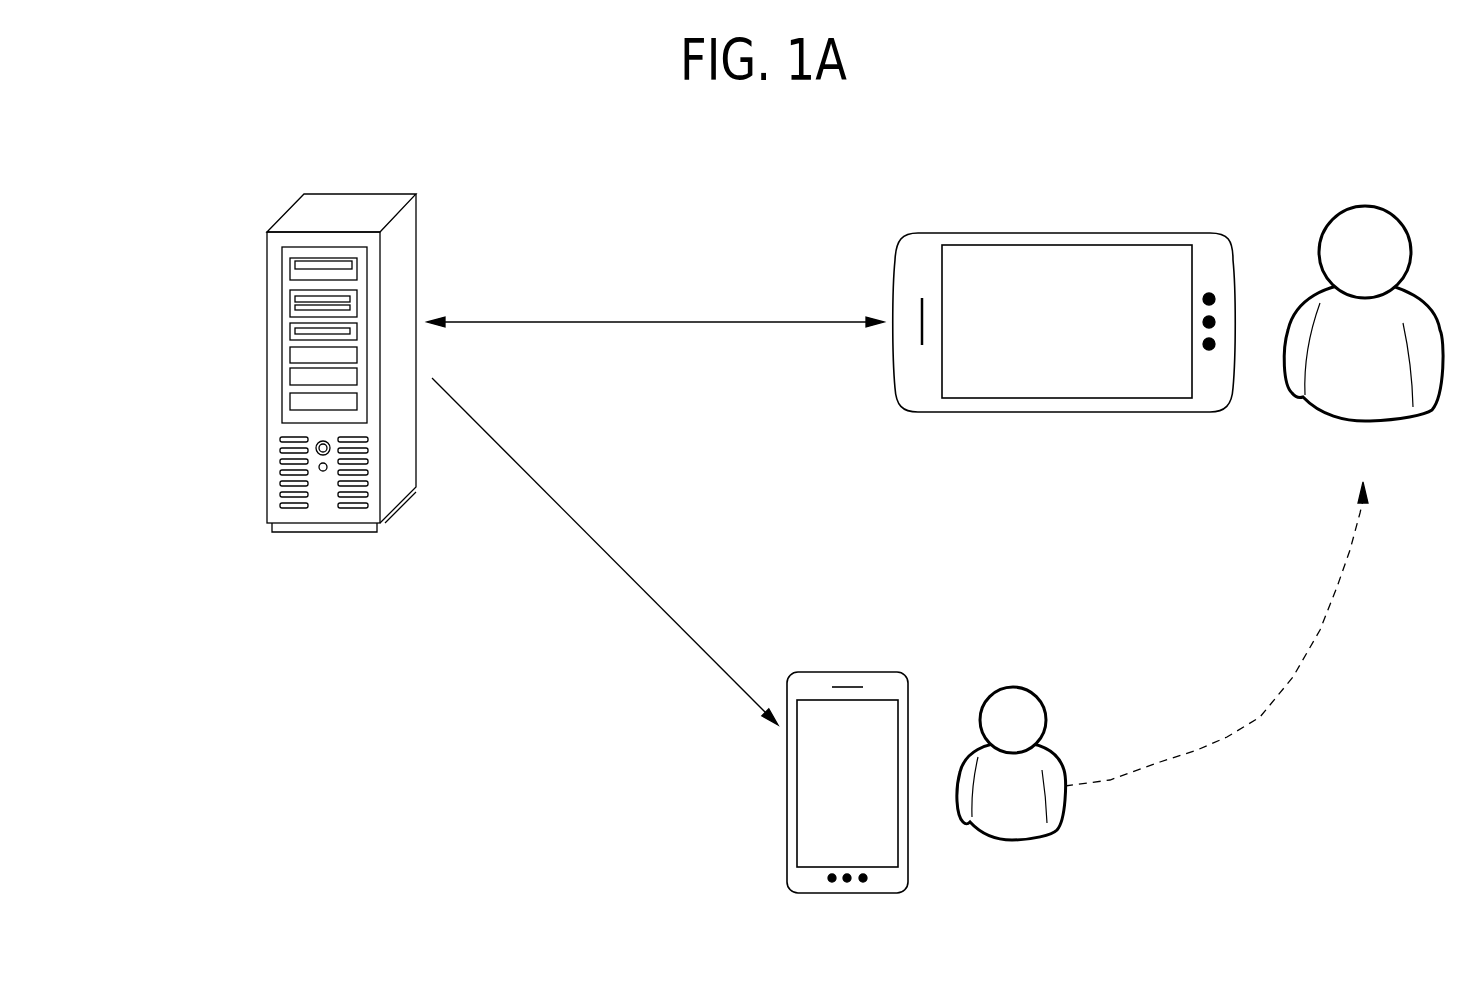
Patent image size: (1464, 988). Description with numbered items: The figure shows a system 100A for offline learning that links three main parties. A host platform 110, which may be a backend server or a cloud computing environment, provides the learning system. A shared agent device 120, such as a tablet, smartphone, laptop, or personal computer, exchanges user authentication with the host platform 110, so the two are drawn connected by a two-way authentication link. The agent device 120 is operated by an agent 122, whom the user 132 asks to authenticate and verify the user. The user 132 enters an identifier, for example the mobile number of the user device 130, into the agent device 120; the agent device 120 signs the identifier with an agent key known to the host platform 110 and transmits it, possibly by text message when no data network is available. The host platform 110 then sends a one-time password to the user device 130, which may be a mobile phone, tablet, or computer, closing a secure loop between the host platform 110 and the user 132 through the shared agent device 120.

The system for offline learning 100A is at (137, 86).
The host platform 110 is at (329, 386).
The agent device 120 is at (1064, 343).
The agent 122 is at (1363, 332).
The user device 130 is at (854, 807).
The user 132 is at (1011, 780).